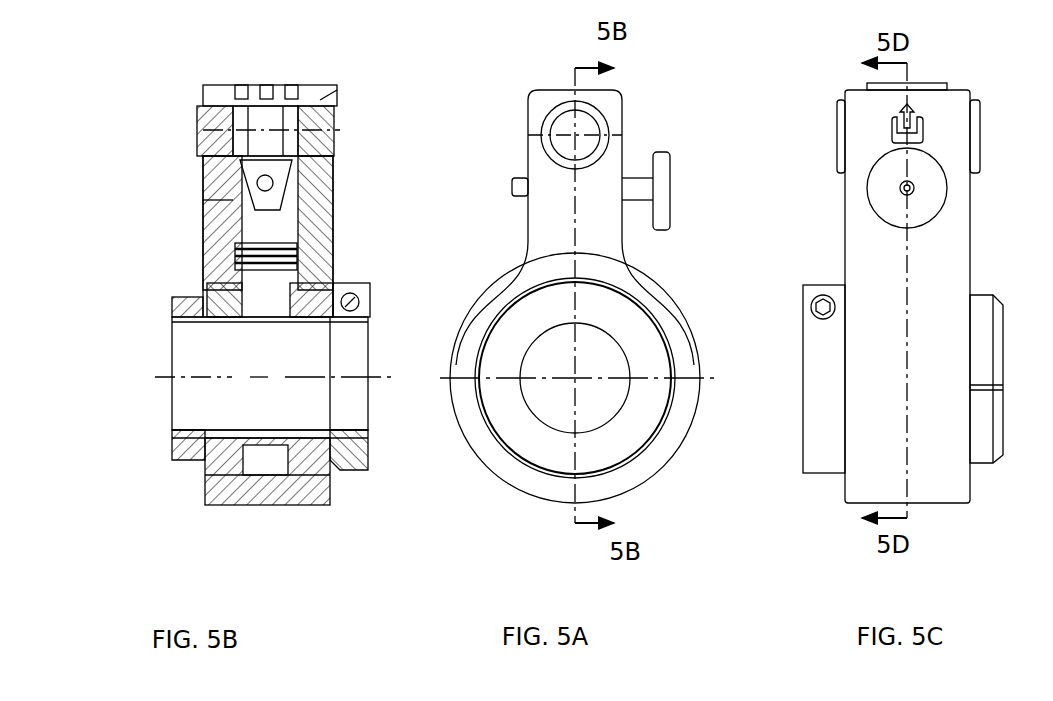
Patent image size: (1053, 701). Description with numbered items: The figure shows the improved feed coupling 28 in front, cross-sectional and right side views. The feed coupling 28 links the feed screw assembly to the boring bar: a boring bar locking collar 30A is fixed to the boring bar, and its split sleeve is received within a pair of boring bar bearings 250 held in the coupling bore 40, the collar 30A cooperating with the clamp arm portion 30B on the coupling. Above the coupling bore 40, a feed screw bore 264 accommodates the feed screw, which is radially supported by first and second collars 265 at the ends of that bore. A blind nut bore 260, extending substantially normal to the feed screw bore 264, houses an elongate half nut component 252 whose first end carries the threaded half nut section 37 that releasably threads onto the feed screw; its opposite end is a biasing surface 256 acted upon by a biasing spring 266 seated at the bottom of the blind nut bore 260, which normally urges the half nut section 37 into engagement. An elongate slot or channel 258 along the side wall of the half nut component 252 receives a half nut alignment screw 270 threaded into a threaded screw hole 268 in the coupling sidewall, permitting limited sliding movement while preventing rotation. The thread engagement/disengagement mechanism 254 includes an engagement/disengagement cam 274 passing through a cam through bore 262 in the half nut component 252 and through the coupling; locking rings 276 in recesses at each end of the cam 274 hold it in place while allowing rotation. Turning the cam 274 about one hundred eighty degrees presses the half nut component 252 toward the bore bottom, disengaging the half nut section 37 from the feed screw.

In FIG. 5B, the feed coupling 28 is at (333, 243).
In FIG. 5A, the feed coupling 28 is at (618, 252).
In FIG. 5C, the feed coupling 28 is at (845, 247).
In FIG. 5B, the boring bar locking collar 30A is at (368, 465).
In FIG. 5C, the boring bar locking collar 30A is at (810, 393).
In FIG. 5B, the second clamp arm portion 30B is at (185, 458).
In FIG. 5C, the second clamp arm portion 30B is at (985, 465).
In FIG. 5B, the threaded half nut section 37 is at (298, 158).
In FIG. 5B, the coupling bore 40 is at (148, 358).
In FIG. 5A, the coupling bore 40 is at (605, 413).
In FIG. 5C, the coupling bore 40 is at (1010, 345).
In FIG. 5B, the boring bar bearings 250 is at (222, 478).
In FIG. 5B, the elongate half nut component 252 is at (225, 200).
In FIG. 5B, the thread engagement/disengagement mechanism 254 is at (100, 210).
In FIG. 5A, the thread engagement/disengagement mechanism 254 is at (695, 160).
In FIG. 5B, the biasing surface 256 is at (297, 262).
In FIG. 5B, the elongate slot or channel 258 is at (235, 225).
In FIG. 5B, the blind nut bore 260 is at (268, 108).
In FIG. 5B, the cam through bore 262 is at (330, 200).
In FIG. 5B, the feed screw bore 264 is at (190, 112).
In FIG. 5C, the feed screw bore 264 is at (990, 138).
In FIG. 5B, the collar 265 is at (337, 95).
In FIG. 5B, the biasing spring 266 is at (275, 182).
In FIG. 5B, the threaded screw hole 268 is at (190, 208).
In FIG. 5B, the half nut alignment screw 270 is at (215, 188).
In FIG. 5A, the engagement/disengagement cam 274 is at (672, 210).
In FIG. 5C, the engagement/disengagement cam 274 is at (960, 197).
In FIG. 5A, the locking ring 276 is at (636, 178).